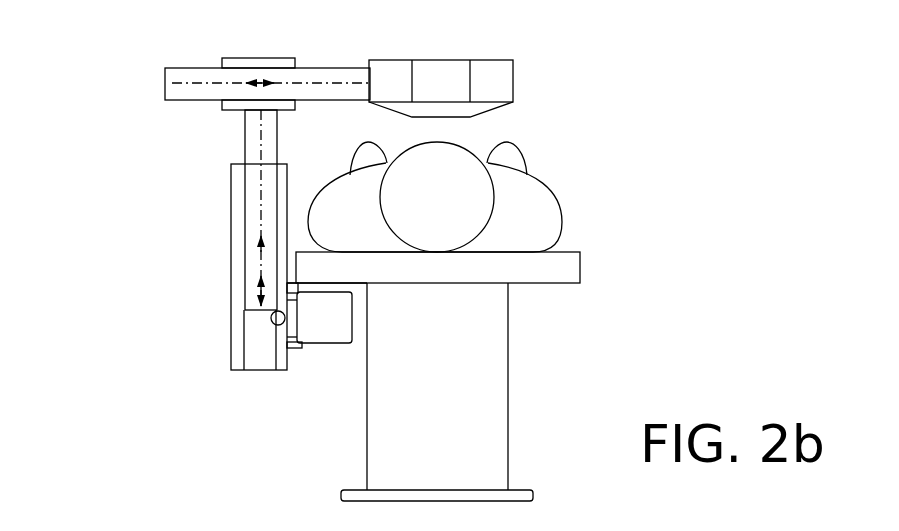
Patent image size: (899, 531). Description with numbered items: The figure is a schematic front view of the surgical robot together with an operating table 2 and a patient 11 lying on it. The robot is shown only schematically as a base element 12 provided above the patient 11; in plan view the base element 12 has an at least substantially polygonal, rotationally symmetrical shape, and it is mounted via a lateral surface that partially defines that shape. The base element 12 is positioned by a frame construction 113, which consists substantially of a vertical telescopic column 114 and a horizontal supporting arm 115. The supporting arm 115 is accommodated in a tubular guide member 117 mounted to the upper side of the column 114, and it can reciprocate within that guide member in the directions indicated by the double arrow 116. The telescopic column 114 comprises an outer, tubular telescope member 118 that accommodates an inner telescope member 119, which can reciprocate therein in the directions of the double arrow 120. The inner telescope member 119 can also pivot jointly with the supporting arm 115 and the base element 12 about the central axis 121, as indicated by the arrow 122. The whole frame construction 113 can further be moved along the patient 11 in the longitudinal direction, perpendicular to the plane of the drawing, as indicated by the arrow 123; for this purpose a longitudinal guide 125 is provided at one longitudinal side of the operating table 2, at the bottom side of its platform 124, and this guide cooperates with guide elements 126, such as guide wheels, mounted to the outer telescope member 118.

The operating table 2 is at (572, 344).
The patient 11 is at (538, 229).
The base element 12 is at (498, 73).
The frame construction 113 is at (128, 272).
The telescopic column 114 is at (200, 189).
The supporting arm 115 is at (331, 73).
The double arrow 116 is at (258, 86).
The tubular guide member 117 is at (260, 63).
The outer telescope member 118 is at (238, 343).
The inner telescope member 119 is at (250, 121).
The double arrow 120 is at (258, 293).
The central axis 121 is at (264, 167).
The arrow 122 is at (258, 232).
The arrow 123 is at (271, 324).
The platform 124 is at (550, 262).
The longitudinal guide 125 is at (318, 325).
The guide elements 126 is at (297, 348).